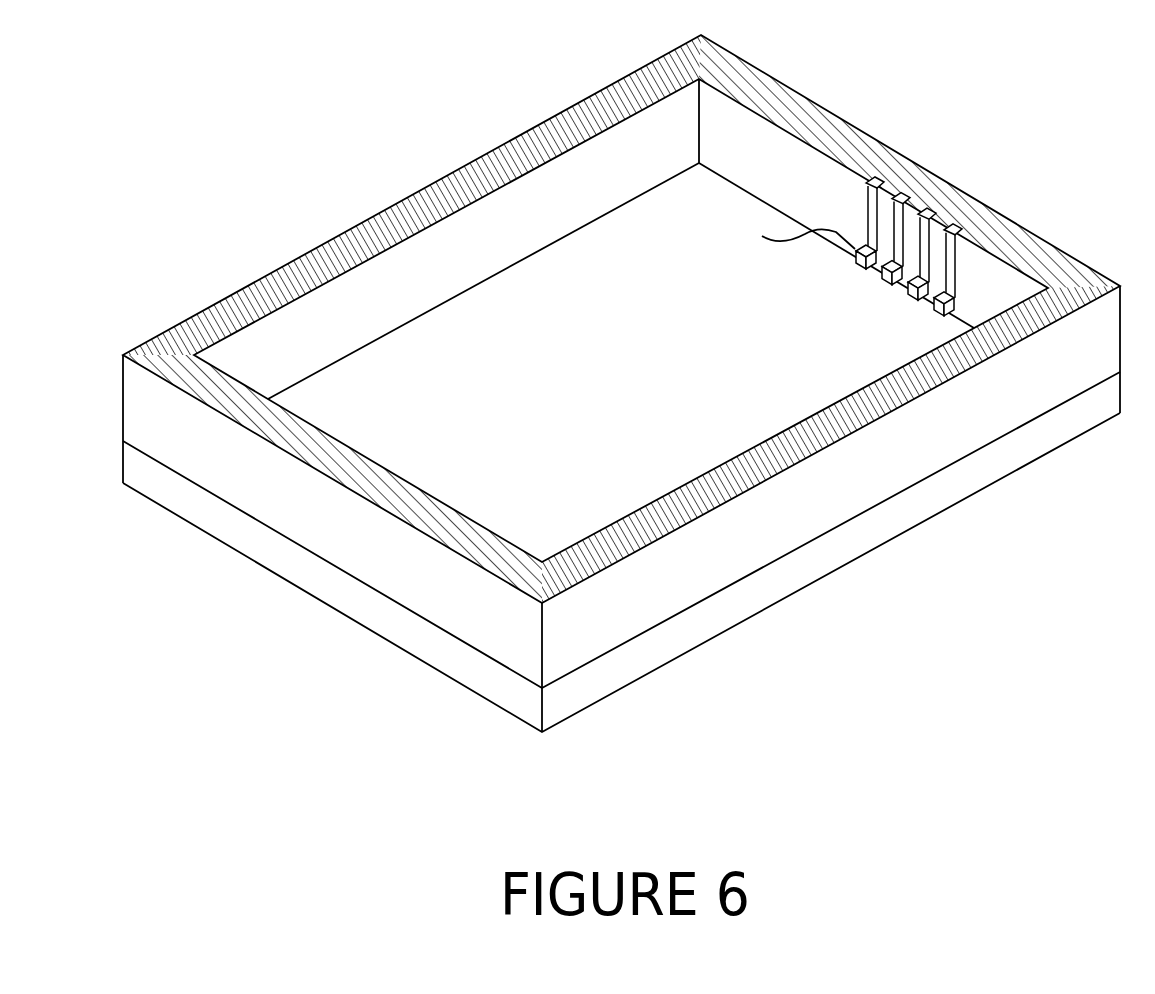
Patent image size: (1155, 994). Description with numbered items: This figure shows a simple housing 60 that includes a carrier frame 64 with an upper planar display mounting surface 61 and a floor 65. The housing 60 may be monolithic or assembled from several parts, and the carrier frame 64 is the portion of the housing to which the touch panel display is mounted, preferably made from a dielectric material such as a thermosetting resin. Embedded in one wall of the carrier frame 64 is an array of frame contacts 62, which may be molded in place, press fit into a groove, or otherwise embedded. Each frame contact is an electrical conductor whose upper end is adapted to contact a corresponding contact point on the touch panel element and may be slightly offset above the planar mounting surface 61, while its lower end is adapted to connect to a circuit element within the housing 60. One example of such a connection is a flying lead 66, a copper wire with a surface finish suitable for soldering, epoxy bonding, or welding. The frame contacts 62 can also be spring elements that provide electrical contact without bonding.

The housing 60 is at (772, 605).
The upper planar display mounting surface 61 is at (323, 461).
The frame contacts 62 is at (882, 181).
The carrier frame 64 is at (831, 508).
The floor 65 is at (629, 382).
The flying lead 66 is at (775, 254).